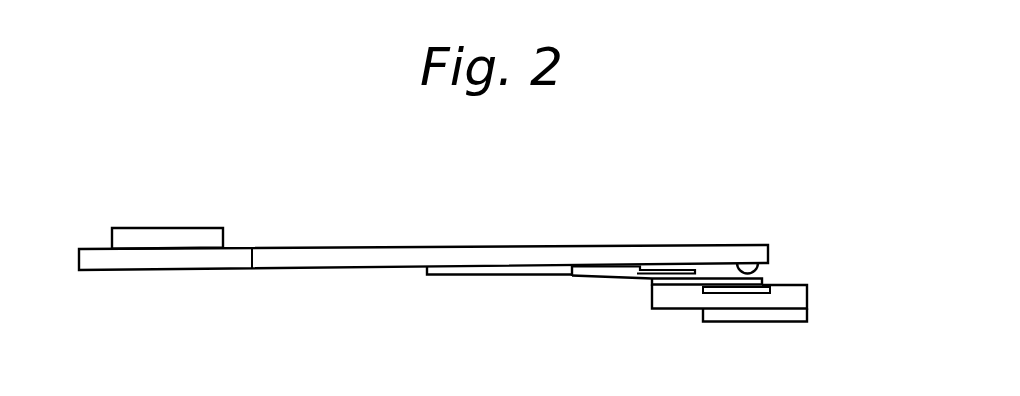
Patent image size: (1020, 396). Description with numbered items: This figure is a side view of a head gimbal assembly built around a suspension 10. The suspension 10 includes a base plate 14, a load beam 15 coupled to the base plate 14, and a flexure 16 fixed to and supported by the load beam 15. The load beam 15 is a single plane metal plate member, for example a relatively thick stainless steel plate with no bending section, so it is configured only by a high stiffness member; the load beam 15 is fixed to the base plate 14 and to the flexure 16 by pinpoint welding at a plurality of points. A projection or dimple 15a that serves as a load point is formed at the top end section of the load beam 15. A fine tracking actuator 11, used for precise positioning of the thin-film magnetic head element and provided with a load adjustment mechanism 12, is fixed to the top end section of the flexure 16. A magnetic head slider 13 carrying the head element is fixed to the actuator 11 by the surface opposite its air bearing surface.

The suspension 10 is at (637, 206).
The fine tracking actuator 11 is at (677, 302).
The load adjustment mechanism 12 is at (717, 280).
The magnetic head slider 13 is at (763, 315).
The base plate 14 is at (235, 254).
The load beam 15 is at (341, 252).
The projection or dimple 15a is at (760, 270).
The flexure 16 is at (513, 274).